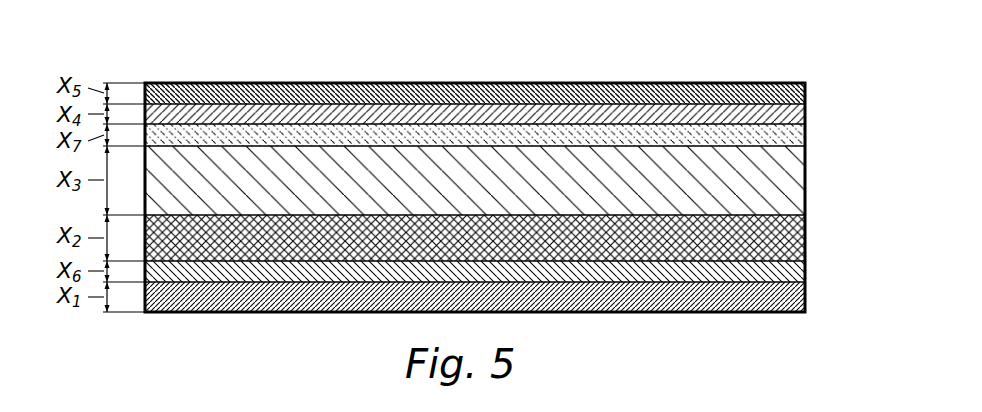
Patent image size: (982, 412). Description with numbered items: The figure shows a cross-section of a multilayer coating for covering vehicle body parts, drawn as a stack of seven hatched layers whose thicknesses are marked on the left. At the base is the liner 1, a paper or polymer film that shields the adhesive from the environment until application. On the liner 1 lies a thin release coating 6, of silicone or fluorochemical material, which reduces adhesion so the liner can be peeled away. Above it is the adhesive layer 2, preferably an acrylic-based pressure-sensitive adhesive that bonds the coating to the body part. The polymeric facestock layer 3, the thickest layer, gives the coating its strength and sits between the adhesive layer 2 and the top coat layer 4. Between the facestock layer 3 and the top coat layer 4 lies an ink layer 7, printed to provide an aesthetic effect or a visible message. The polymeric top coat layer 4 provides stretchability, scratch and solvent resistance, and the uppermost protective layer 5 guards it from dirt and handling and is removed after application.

The liner 1 is at (800, 296).
The adhesive layer 2 is at (800, 237).
The facestock layer 3 is at (800, 179).
The top coat layer 4 is at (800, 113).
The protective layer 5 is at (800, 92).
The release coating 6 is at (800, 270).
The ink layer 7 is at (800, 134).